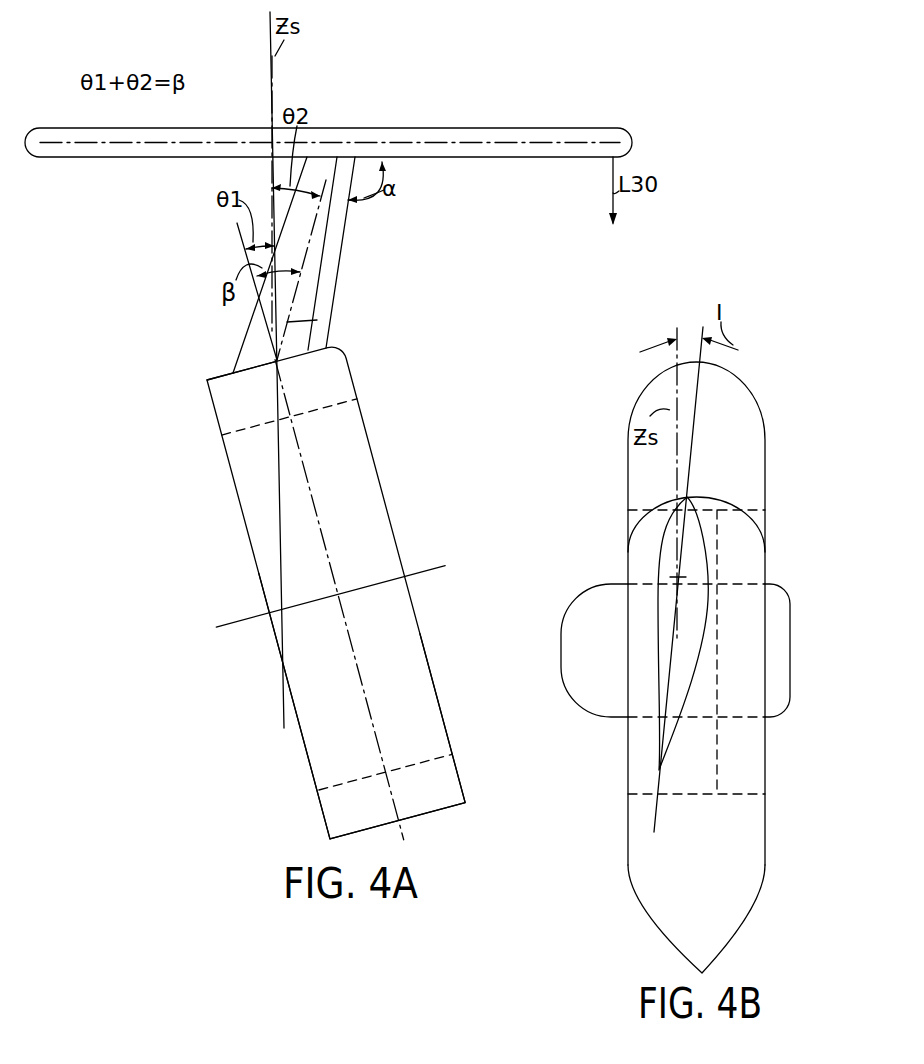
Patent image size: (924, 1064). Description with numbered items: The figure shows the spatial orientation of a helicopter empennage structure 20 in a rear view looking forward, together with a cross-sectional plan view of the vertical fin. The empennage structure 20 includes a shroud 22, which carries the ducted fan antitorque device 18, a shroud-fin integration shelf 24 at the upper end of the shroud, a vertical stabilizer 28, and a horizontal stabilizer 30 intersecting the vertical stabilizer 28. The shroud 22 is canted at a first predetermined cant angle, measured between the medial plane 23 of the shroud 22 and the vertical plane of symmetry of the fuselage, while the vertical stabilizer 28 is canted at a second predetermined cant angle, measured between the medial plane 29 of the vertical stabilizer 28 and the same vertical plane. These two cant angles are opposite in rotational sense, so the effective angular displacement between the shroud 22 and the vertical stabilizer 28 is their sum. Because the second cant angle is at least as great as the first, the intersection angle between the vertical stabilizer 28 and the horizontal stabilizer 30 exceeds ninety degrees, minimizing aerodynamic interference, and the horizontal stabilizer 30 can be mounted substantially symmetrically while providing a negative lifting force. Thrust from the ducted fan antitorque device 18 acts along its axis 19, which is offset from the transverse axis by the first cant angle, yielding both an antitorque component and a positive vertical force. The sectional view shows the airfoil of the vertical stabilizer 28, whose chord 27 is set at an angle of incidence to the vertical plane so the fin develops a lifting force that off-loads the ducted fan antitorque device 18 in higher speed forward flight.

In FIG. 4A, the ducted fan antitorque device 18 is at (297, 740).
In FIG. 4B, the ducted fan antitorque device 18 is at (592, 722).
In FIG. 4A, the axis of the ducted fan antitorque device 19 is at (344, 580).
In FIG. 4A, the empennage structure 20 is at (190, 498).
In FIG. 4B, the empennage structure 20 is at (838, 648).
In FIG. 4A, the shroud 22 is at (463, 770).
In FIG. 4B, the shroud 22 is at (628, 855).
In FIG. 4A, the medial plane of the shroud 23 is at (317, 507).
In FIG. 4A, the shroud-fin integration shelf 24 is at (206, 378).
In FIG. 4B, the chord of the vertical stabilizer 27 is at (676, 633).
In FIG. 4A, the vertical stabilizer 28 is at (343, 224).
In FIG. 4B, the vertical stabilizer 28 is at (710, 577).
In FIG. 4A, the medial plane of the vertical stabilizer 29 is at (329, 314).
In FIG. 4A, the horizontal stabilizer 30 is at (478, 130).